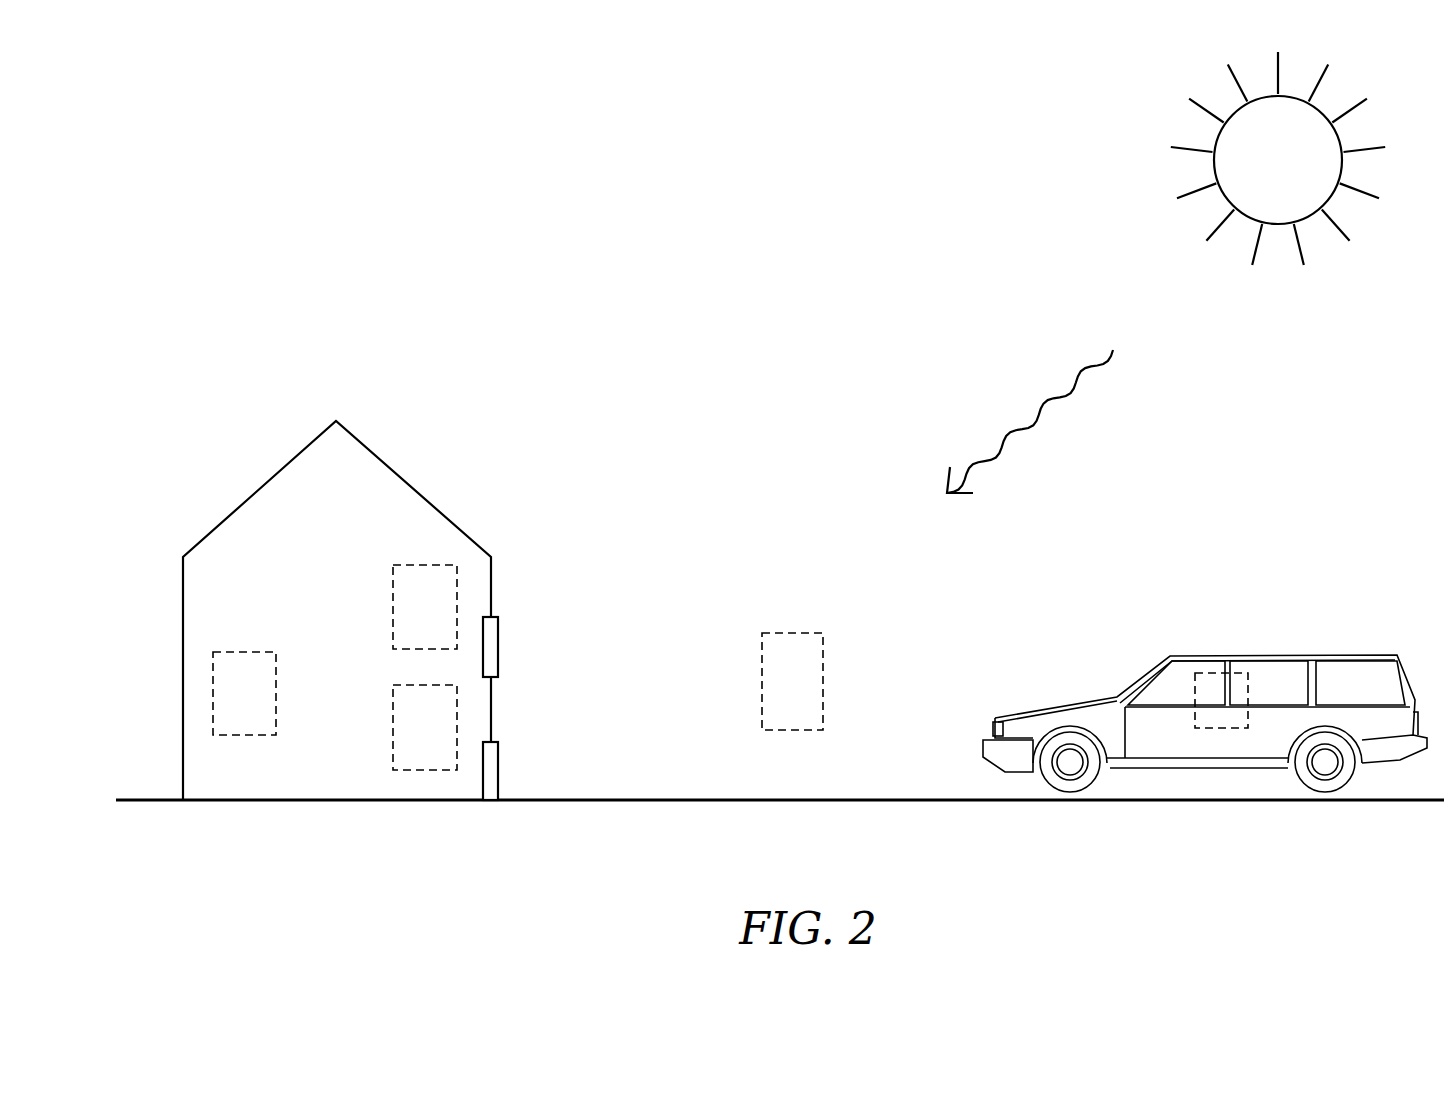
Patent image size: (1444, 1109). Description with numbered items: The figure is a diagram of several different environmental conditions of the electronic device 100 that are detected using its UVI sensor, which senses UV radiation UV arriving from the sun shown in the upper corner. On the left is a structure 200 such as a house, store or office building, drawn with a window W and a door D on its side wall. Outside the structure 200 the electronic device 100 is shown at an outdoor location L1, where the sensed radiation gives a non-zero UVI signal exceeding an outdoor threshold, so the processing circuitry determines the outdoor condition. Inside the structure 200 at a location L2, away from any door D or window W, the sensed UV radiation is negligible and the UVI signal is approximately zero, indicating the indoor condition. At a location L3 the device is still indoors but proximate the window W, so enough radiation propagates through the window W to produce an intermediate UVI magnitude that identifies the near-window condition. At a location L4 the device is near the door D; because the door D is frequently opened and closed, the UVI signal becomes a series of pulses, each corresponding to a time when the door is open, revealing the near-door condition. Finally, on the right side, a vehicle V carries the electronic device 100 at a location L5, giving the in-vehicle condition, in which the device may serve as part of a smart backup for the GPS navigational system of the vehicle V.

The electronic device 100 is at (226, 701).
The structure 200 is at (415, 487).
The window W is at (498, 645).
The door D is at (498, 768).
The vehicle V is at (1285, 655).
The UV radiation UV is at (1030, 421).
The location L1 is at (792, 752).
The location L2 is at (245, 757).
The location L3 is at (425, 667).
The location L4 is at (425, 788).
The location L5 is at (1222, 745).